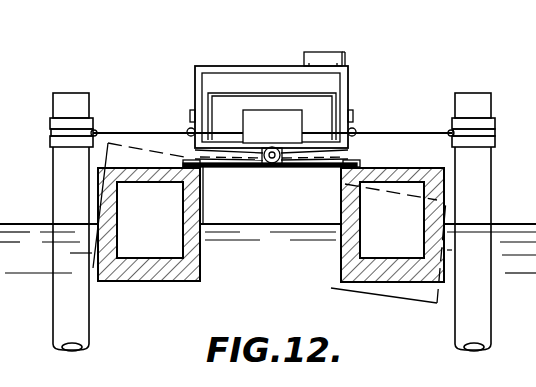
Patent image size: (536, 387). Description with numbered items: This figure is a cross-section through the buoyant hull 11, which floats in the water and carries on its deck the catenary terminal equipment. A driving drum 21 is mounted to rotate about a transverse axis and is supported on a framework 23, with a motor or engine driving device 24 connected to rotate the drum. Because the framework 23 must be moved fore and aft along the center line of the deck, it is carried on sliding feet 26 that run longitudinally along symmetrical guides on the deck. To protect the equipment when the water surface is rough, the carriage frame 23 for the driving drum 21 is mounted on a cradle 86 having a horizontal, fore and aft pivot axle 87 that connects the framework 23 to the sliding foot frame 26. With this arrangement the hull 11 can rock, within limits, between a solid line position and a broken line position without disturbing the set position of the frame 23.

The hull 11 is at (150, 282).
The driving drum 21 is at (318, 104).
The framework 23 is at (346, 70).
The driving device 24 is at (336, 52).
The sliding feet 26 is at (356, 163).
The cradle 86 is at (354, 133).
The pivot axle 87 is at (272, 164).